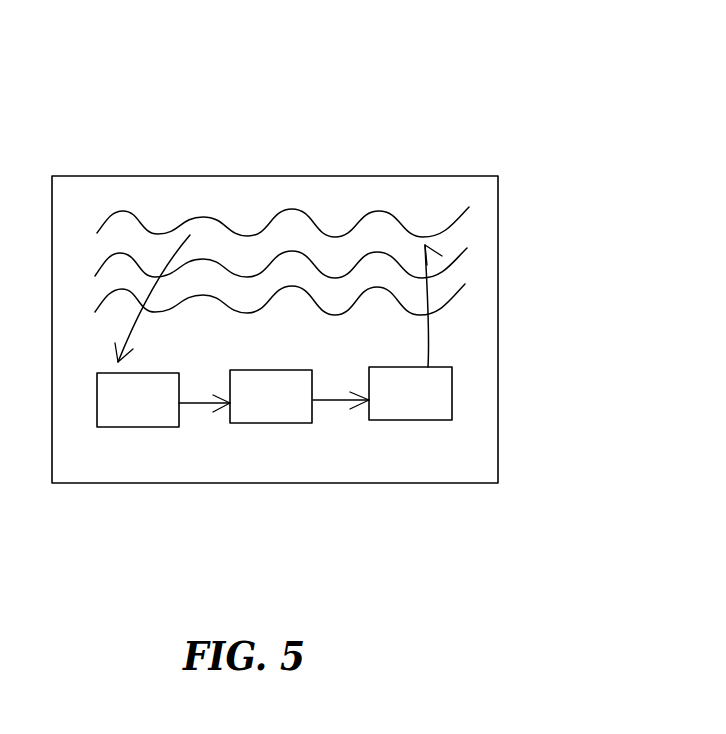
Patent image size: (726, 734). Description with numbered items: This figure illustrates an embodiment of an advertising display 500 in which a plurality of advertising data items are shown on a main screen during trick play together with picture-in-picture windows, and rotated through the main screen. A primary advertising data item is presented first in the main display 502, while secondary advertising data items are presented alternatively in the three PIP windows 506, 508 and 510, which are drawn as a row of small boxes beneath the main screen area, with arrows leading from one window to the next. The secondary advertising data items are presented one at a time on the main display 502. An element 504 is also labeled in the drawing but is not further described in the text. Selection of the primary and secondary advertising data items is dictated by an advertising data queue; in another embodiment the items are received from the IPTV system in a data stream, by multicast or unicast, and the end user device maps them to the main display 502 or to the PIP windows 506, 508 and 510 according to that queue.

The display system 500 is at (409, 135).
The main display 502 is at (480, 190).
The light 504 is at (452, 262).
The PIP window 506 is at (131, 407).
The PIP window 508 is at (270, 404).
The PIP window 510 is at (413, 401).